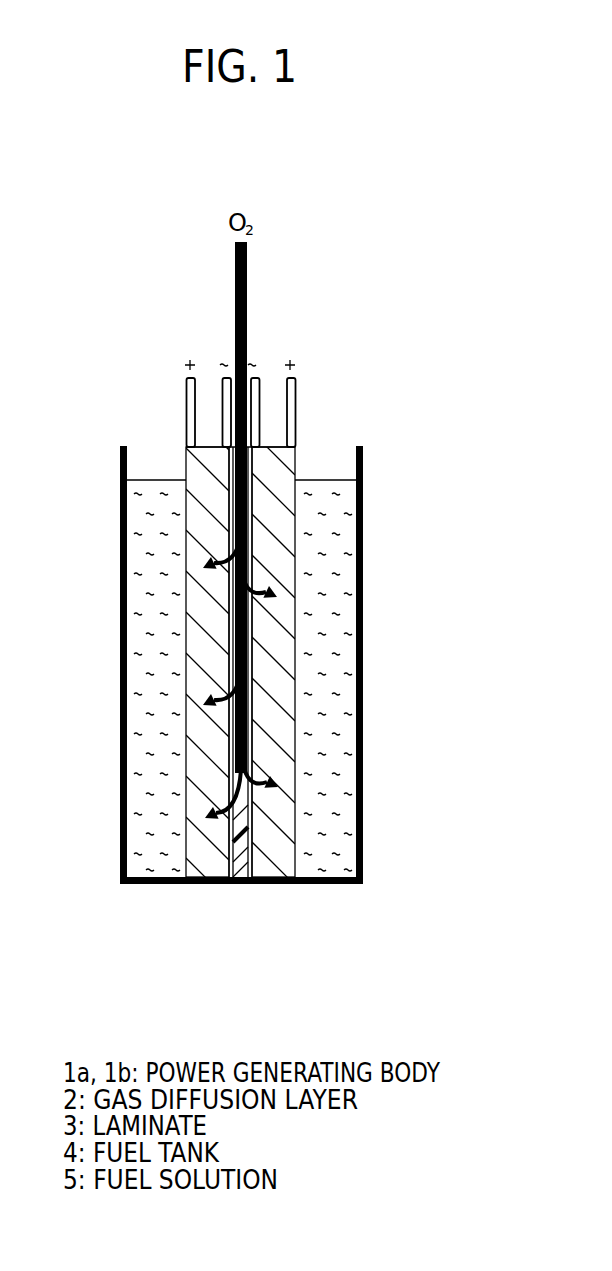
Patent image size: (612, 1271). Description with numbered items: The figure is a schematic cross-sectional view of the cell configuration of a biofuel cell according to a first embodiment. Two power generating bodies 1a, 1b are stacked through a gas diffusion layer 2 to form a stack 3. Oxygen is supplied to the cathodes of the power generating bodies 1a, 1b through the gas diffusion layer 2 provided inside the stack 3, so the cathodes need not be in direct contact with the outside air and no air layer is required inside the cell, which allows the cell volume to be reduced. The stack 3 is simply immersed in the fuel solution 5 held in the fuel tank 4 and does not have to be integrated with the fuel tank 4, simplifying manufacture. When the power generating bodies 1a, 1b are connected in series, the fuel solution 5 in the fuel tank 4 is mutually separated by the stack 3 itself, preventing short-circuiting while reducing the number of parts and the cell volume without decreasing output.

The power generating body 1a is at (200, 753).
The power generating body 1b is at (287, 770).
The gas diffusion layer 2 is at (247, 557).
The stack 3 is at (242, 595).
The fuel tank 4 is at (363, 683).
The fuel solution 5 is at (153, 593).